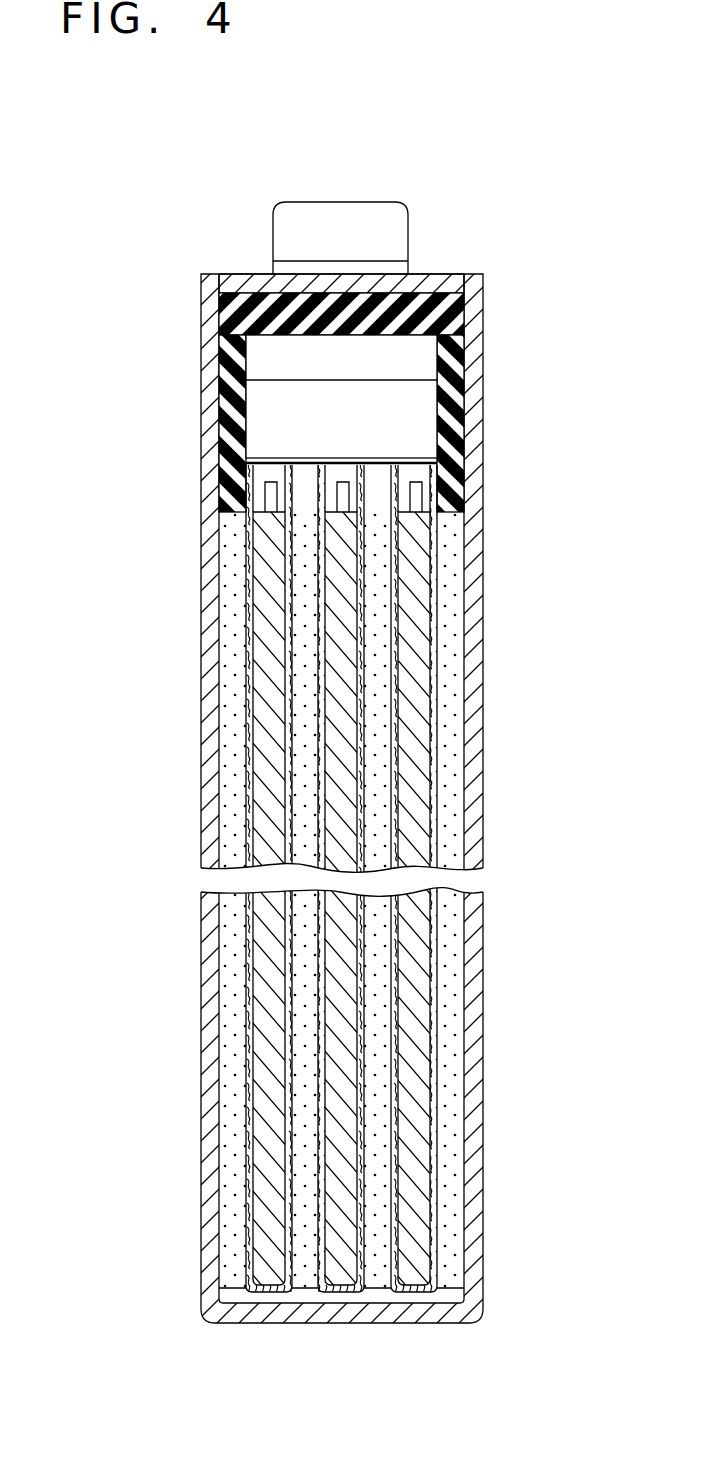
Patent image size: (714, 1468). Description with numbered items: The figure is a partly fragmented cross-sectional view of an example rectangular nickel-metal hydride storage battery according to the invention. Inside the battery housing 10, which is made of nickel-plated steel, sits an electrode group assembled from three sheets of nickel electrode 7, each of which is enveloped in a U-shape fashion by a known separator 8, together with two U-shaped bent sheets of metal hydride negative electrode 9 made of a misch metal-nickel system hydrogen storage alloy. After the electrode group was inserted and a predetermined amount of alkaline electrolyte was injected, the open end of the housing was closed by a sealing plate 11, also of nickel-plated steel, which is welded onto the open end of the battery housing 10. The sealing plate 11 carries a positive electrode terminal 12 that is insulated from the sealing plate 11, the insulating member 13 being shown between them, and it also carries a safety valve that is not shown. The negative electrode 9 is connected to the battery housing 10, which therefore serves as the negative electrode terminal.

The nickel electrode 7 is at (413, 560).
The separator 8 is at (433, 712).
The metal hydride negative electrode 9 is at (448, 622).
The battery housing 10 is at (472, 449).
The sealing plate 11 is at (443, 284).
The positive electrode terminal 12 is at (355, 213).
The gasket 13 is at (470, 364).